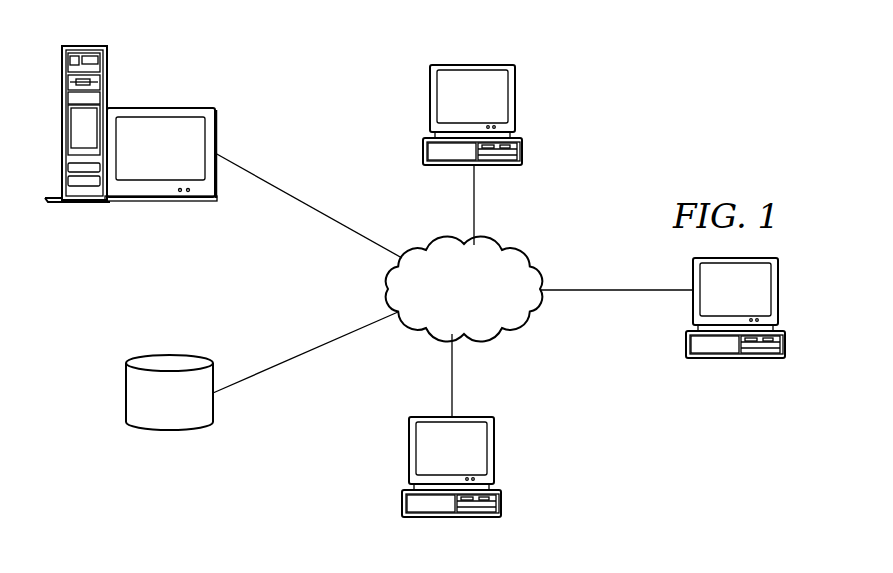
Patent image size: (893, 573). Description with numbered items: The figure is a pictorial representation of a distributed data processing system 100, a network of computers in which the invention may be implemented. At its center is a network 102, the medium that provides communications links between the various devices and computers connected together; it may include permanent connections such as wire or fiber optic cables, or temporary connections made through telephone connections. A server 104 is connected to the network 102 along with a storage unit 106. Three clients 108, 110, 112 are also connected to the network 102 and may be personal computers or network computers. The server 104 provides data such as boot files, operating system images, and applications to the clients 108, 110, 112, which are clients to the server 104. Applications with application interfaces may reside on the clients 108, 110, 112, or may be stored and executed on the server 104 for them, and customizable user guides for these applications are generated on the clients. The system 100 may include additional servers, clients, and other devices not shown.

The distributed data processing system 100 is at (638, 453).
The network 102 is at (447, 247).
The server 104 is at (160, 108).
The storage unit 106 is at (126, 398).
The client 108 is at (515, 100).
The client 110 is at (778, 295).
The client 112 is at (497, 455).